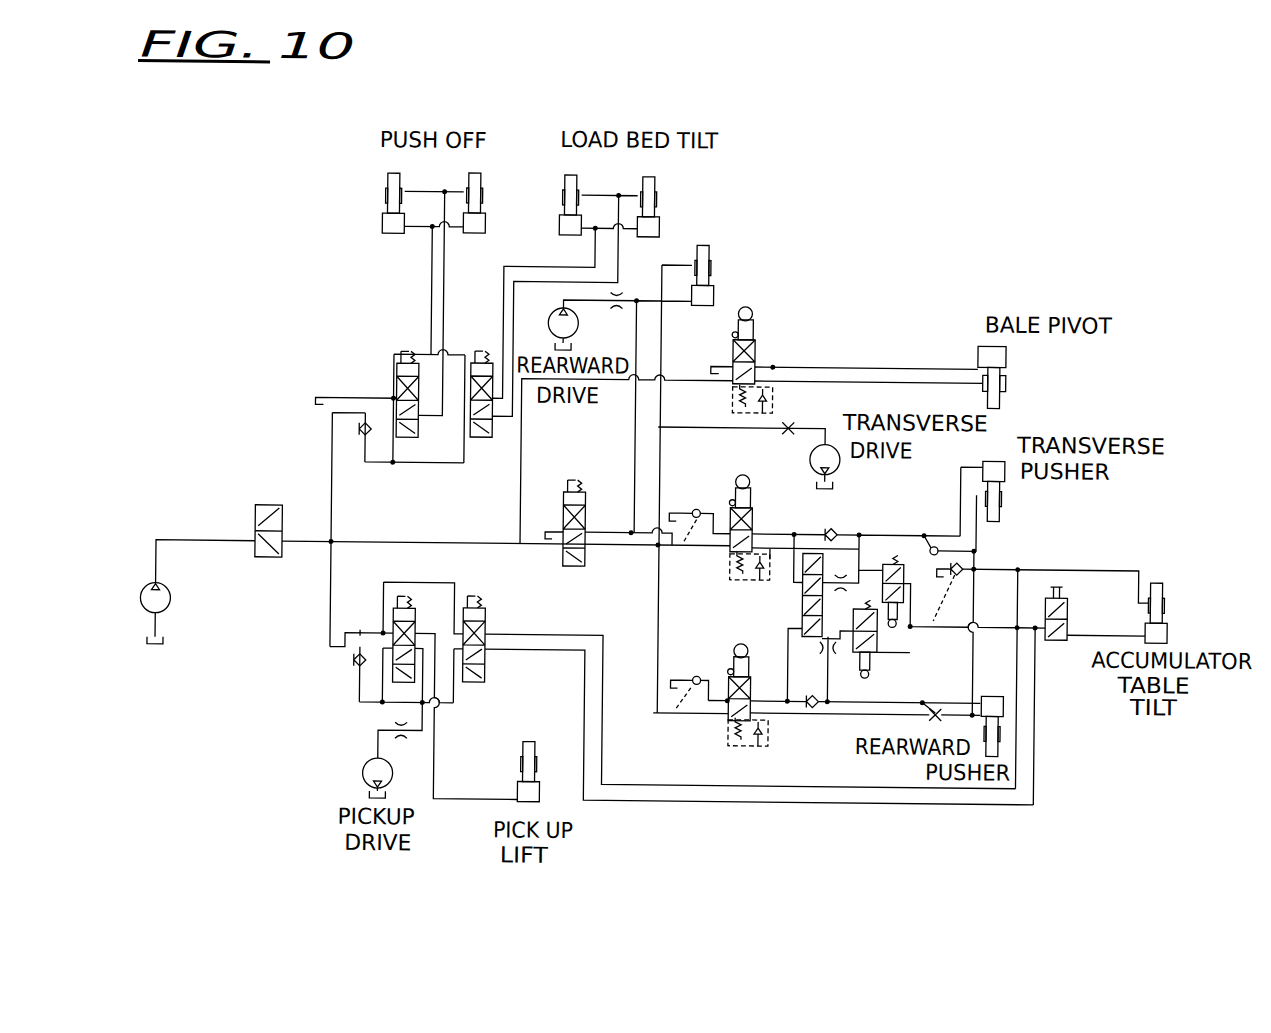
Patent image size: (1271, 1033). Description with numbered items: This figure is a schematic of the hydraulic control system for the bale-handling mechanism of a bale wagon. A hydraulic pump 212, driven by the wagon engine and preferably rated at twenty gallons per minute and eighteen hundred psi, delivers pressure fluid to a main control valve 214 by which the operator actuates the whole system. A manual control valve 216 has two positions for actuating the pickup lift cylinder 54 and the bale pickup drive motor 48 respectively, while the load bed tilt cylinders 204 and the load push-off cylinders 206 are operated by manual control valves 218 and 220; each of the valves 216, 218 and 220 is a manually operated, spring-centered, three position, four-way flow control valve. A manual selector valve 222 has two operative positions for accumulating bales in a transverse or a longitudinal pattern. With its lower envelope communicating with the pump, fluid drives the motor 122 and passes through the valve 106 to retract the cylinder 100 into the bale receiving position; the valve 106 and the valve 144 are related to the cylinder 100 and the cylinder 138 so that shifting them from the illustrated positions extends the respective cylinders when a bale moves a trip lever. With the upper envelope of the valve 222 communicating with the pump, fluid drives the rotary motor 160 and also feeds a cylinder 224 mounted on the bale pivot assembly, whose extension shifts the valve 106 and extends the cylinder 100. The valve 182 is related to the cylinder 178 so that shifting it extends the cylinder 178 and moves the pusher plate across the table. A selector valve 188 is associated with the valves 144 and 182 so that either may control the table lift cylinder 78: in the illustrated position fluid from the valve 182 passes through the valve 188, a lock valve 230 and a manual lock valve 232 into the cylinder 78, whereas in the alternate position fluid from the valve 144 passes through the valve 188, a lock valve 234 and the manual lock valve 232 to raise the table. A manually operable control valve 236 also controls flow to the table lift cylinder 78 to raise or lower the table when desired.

The load push-off cylinders 206 is at (379, 216).
The load bed tilt cylinders 204 is at (556, 210).
The cylinder 224 is at (711, 296).
The rotary motor 160 is at (548, 319).
The valve 106 is at (753, 349).
The cylinder 100 is at (1004, 372).
The motor 122 is at (838, 465).
The cylinder 178 is at (1004, 494).
The main control valve 214 is at (282, 525).
The hydraulic pump 212 is at (172, 603).
The manual control valve 220 is at (405, 440).
The manual control valve 218 is at (479, 442).
The manual selector valve 222 is at (585, 560).
The manual control valve 216 is at (416, 626).
The manually operable control valve 236 is at (486, 664).
The bale pickup drive motor 48 is at (364, 776).
The pickup lift cylinder 54 is at (545, 786).
The valve 182 is at (752, 517).
The selector valve 188 is at (800, 603).
The lock valve 230 is at (904, 570).
The lock valve 234 is at (878, 636).
The valve 144 is at (750, 667).
The manual lock valve 232 is at (1068, 604).
The table lift cylinder 78 is at (1168, 606).
The cylinder 138 is at (1005, 710).